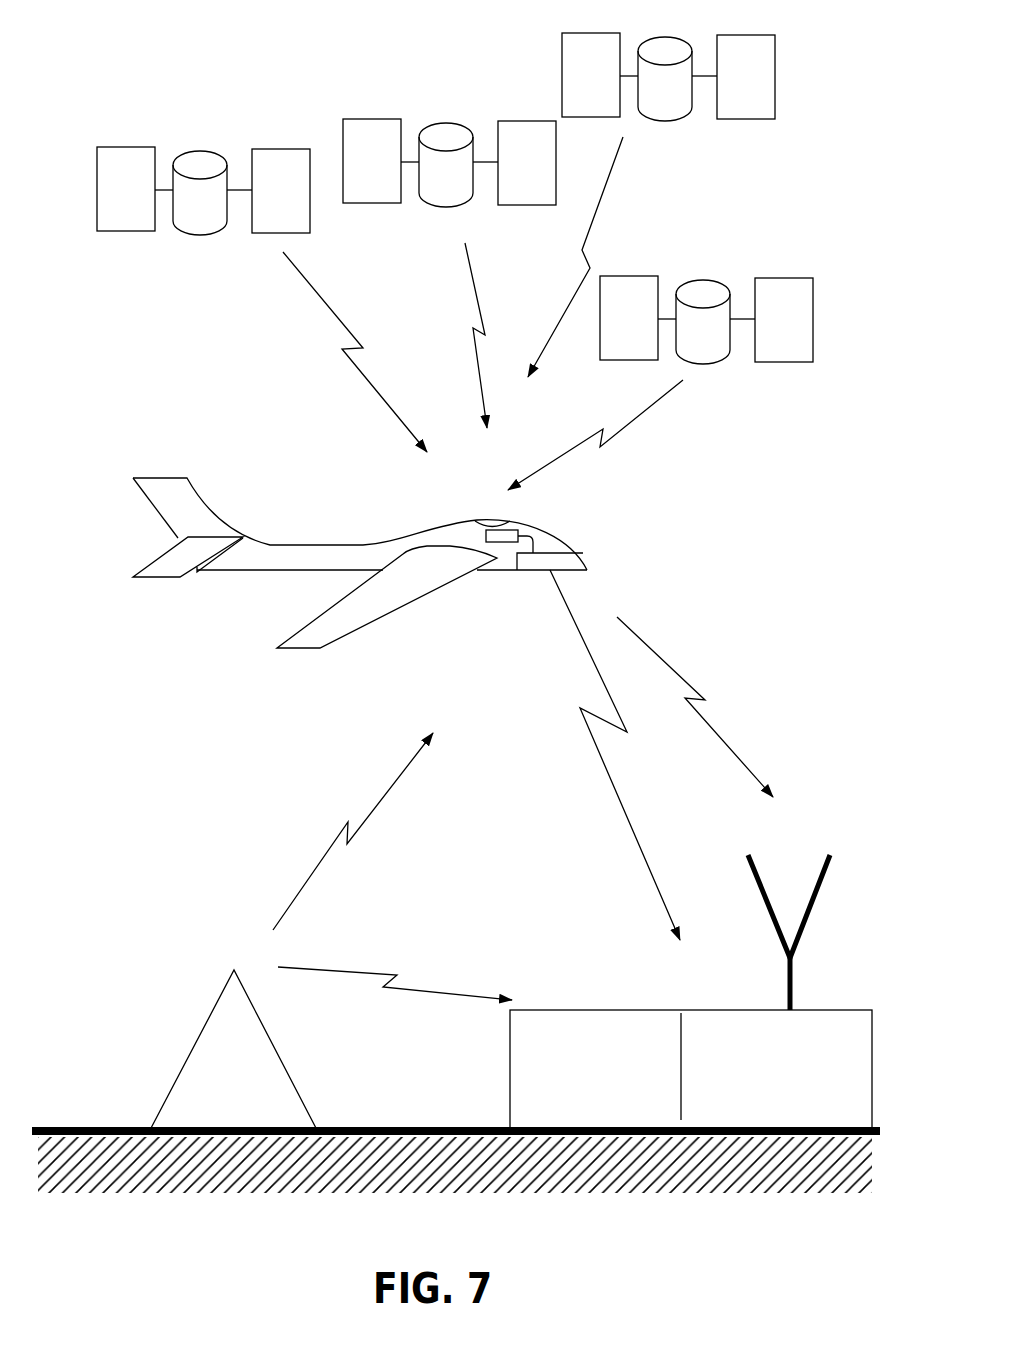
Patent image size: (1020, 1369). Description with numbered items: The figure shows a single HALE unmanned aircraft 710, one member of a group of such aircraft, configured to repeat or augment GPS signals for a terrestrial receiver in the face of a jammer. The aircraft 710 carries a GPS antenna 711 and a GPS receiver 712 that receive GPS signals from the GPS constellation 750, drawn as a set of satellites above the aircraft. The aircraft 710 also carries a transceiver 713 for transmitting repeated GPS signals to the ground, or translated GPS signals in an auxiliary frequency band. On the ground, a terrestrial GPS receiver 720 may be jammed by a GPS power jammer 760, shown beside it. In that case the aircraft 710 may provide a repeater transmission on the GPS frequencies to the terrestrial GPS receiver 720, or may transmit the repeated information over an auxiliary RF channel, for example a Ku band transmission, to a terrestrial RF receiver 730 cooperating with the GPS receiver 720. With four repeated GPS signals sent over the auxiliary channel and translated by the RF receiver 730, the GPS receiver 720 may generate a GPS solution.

The GPS constellation 750 is at (280, 89).
The HALE unmanned aircraft 710 is at (242, 572).
The GPS antenna 711 is at (488, 520).
The GPS receiver 712 is at (486, 537).
The transceiver 713 is at (570, 563).
The terrestrial GPS receiver 720 is at (610, 1008).
The terrestrial RF receiver 730 is at (813, 932).
The GPS power jammer 760 is at (225, 1050).